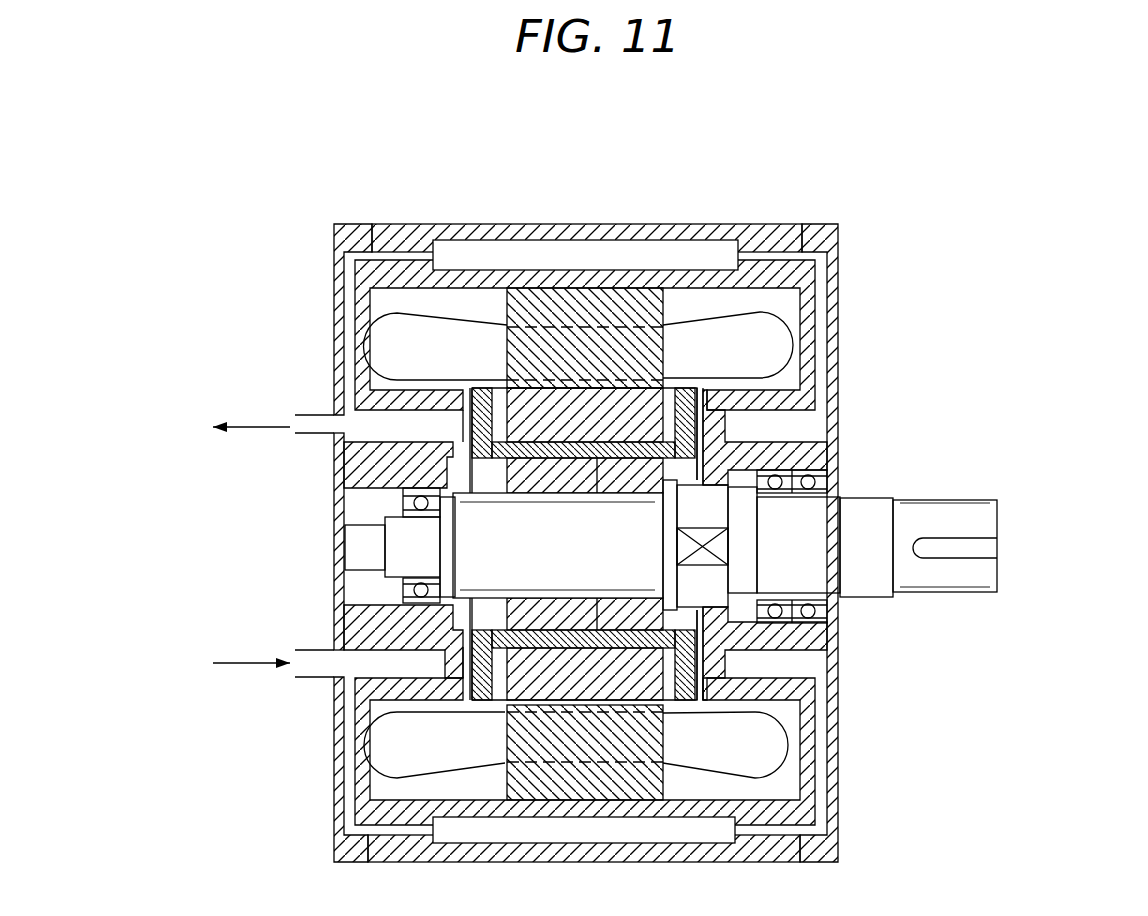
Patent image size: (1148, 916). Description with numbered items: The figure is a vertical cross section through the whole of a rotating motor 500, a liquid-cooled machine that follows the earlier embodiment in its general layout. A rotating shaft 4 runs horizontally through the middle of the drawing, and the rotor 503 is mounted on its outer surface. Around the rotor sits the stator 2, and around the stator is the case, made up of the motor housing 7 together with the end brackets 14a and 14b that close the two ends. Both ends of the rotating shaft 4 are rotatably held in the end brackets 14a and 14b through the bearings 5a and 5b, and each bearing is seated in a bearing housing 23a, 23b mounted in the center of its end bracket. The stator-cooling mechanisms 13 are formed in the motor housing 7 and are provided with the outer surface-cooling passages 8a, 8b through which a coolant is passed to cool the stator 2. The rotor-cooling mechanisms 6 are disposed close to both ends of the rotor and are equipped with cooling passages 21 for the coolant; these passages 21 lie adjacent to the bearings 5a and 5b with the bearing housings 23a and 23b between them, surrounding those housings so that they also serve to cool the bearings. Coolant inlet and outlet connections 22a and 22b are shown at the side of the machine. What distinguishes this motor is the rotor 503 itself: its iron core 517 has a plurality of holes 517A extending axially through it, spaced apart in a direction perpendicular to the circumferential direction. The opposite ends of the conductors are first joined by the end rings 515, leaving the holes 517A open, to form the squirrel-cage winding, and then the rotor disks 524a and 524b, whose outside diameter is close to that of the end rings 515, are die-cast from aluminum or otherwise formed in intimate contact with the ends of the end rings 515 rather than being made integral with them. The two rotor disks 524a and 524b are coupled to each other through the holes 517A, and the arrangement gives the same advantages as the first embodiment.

The rotating motor 500 is at (870, 173).
The stator-cooling mechanism 13 is at (488, 226).
The end bracket 14a is at (840, 252).
The end bracket 14b is at (335, 250).
The motor housing 7 is at (552, 226).
The rotor-cooling mechanism 6 is at (725, 398).
The outer surface-cooling passage 8a is at (707, 255).
The outer surface-cooling passage 8b is at (600, 836).
The stator 2 is at (630, 315).
The iron core 517 is at (580, 428).
The holes 517A is at (604, 460).
The end rings 515 is at (695, 377).
The rotor disk 524a is at (713, 432).
The rotor disk 524b is at (453, 433).
The coolant passage 22a is at (700, 427).
The coolant passage 22b is at (453, 417).
The cooling passage 21 is at (795, 663).
The bearing housing 23a is at (843, 448).
The bearing housing 23b is at (393, 470).
The bearing 5a is at (841, 478).
The bearing 5b is at (402, 502).
The rotor 503 is at (705, 470).
The rotating shaft 4 is at (945, 593).